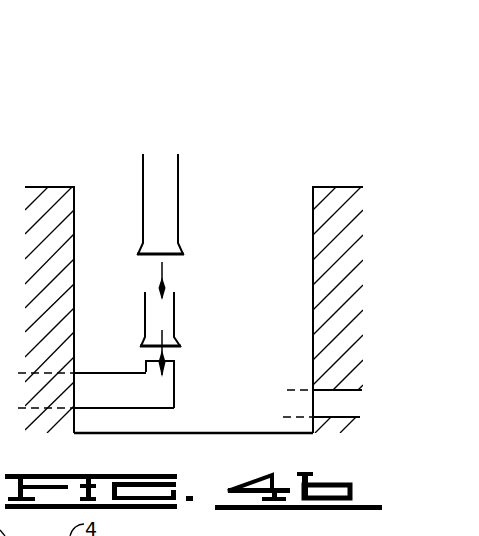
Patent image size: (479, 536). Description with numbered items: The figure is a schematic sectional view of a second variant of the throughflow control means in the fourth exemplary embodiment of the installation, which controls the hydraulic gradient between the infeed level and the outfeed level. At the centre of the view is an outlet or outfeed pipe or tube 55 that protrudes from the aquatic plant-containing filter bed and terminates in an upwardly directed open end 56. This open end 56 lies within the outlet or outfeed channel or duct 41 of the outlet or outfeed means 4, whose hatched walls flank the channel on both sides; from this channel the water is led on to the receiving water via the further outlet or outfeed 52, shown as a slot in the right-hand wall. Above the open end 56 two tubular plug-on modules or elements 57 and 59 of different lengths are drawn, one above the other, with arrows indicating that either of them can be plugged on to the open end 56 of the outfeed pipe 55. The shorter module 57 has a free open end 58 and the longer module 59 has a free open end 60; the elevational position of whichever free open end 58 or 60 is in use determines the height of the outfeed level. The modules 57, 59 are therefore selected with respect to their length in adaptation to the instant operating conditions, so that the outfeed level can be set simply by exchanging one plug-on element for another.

The outlet or outfeed means 4 is at (282, 176).
The outlet or outfeed channel or duct 41 is at (74, 218).
The further outlet or outfeed 52 is at (356, 420).
The outlet or outfeed pipe or tube 55 is at (90, 392).
The open end 56 is at (176, 366).
The tubular plug-on module or element 57 is at (174, 318).
The free open end 58 is at (174, 293).
The tubular plug-on module or element 59 is at (178, 179).
The free open end 60 is at (178, 155).